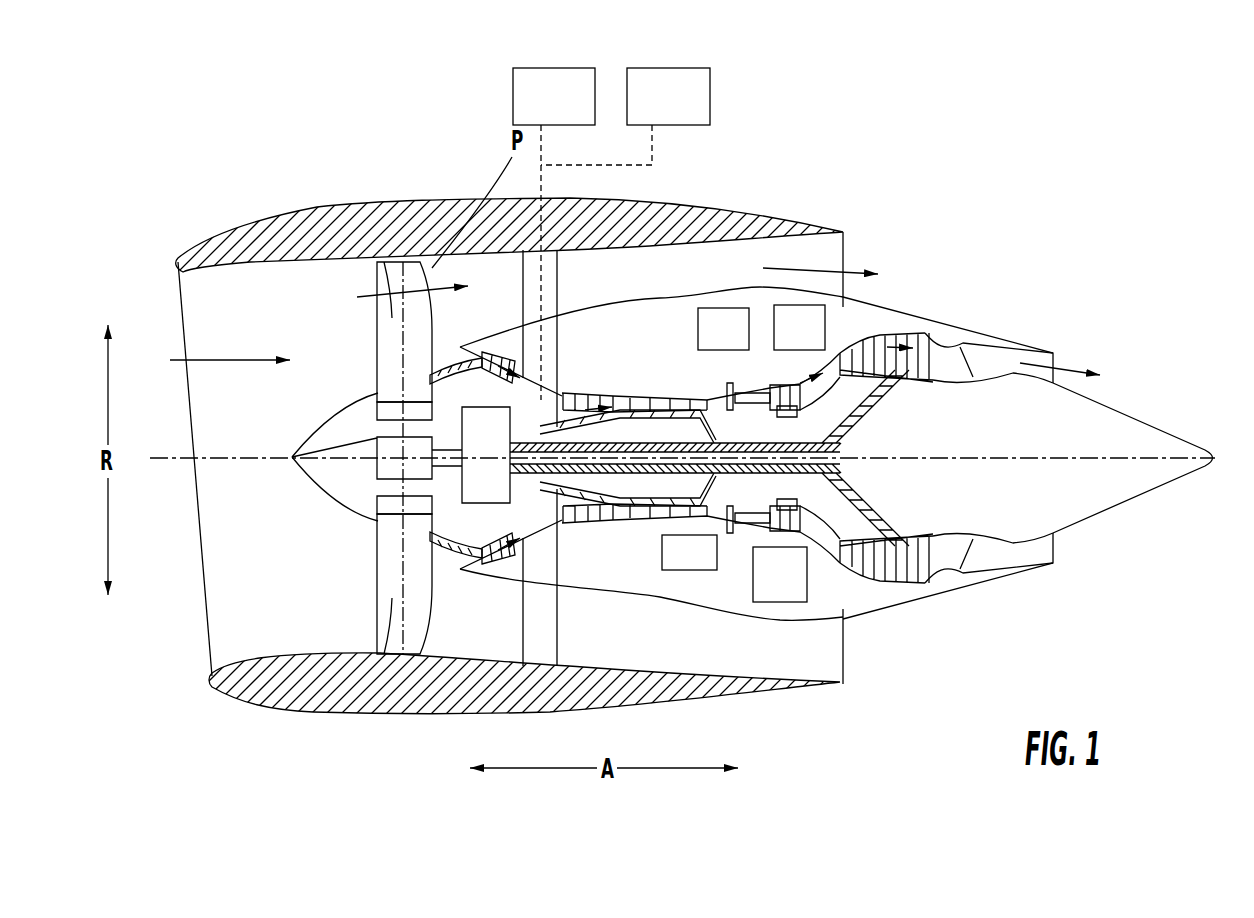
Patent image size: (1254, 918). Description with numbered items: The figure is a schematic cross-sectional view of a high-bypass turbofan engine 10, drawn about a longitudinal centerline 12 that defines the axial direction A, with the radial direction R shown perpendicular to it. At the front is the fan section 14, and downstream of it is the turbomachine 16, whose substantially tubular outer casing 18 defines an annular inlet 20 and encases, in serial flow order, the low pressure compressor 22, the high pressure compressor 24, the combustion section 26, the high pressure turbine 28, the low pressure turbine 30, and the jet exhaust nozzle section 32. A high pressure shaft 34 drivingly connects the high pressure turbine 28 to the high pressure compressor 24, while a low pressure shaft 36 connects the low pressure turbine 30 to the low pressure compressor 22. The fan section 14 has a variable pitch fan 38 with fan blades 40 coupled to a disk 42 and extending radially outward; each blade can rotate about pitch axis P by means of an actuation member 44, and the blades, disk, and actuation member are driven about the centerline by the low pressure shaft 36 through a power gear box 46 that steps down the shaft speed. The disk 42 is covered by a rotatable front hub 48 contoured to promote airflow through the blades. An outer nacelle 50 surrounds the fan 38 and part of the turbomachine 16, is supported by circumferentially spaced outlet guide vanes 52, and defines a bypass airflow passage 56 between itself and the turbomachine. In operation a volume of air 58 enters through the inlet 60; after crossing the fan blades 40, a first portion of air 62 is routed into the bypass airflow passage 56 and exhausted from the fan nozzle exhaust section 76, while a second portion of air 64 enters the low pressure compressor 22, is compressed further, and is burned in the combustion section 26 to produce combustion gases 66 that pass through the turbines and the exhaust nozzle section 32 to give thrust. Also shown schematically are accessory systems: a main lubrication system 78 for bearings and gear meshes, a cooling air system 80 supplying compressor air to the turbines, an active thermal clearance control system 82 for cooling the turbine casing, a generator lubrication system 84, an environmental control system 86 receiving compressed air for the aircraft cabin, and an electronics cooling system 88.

The turbofan engine 10 is at (976, 212).
The longitudinal centerline 12 is at (997, 453).
The fan section 14 is at (338, 282).
The turbomachine 16 is at (670, 345).
The outer casing 18 is at (707, 613).
The annular inlet 20 is at (460, 567).
The low pressure compressor 22 is at (518, 537).
The high pressure compressor 24 is at (585, 503).
The combustion section 26 is at (743, 527).
The high pressure turbine 28 is at (845, 518).
The low pressure turbine 30 is at (918, 573).
The jet exhaust nozzle section 32 is at (973, 557).
The high pressure shaft 34 is at (772, 413).
The low pressure shaft 36 is at (866, 425).
The variable pitch fan 38 is at (343, 507).
The fan blades 40 is at (378, 597).
The disk 42 is at (387, 412).
The actuation member 44 is at (377, 440).
The power gear box 46 is at (493, 423).
The rotatable front hub 48 is at (300, 470).
The outer nacelle 50 is at (422, 714).
The outlet guide vanes 52 is at (557, 280).
The bypass airflow passage 56 is at (704, 287).
The volume of air 58 is at (228, 355).
The inlet 60 is at (208, 655).
The first portion of air 62 is at (395, 300).
The second portion of air 64 is at (458, 345).
The combustion gases 66 is at (880, 335).
The fan nozzle exhaust section 76 is at (828, 277).
The main lubrication system 78 is at (808, 592).
The cooling air system 80 is at (682, 570).
The active thermal clearance control system 82 is at (777, 306).
The generator lubrication system 84 is at (720, 306).
The environmental control system 86 is at (556, 68).
The electronics cooling system 88 is at (672, 68).